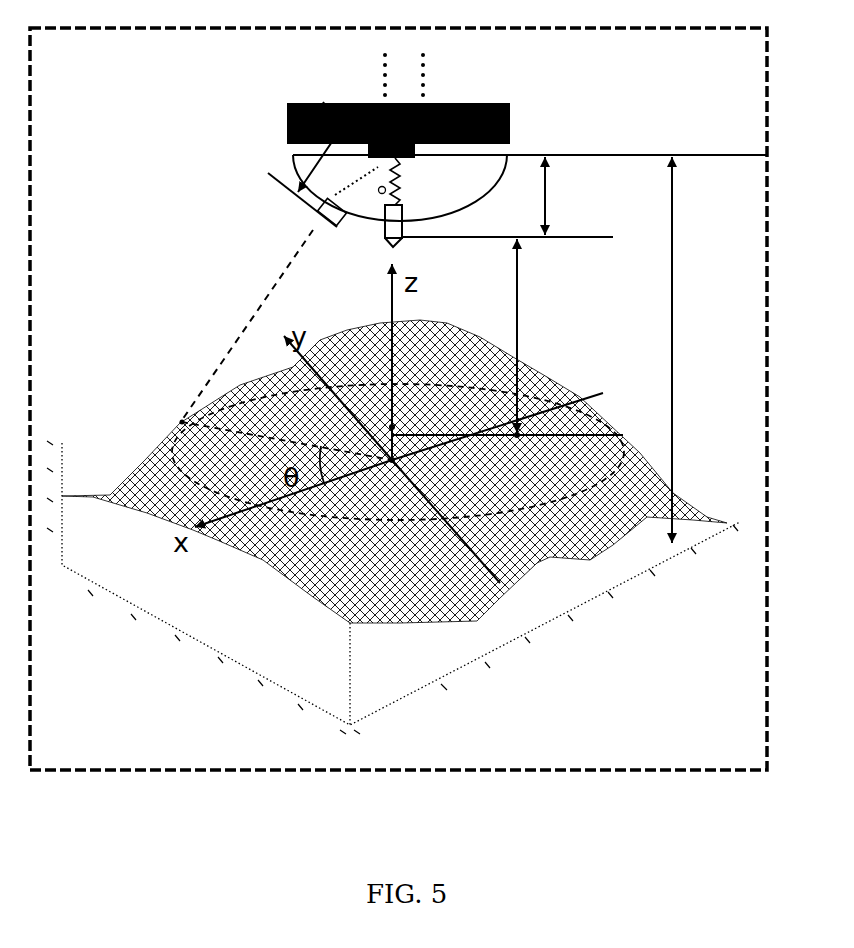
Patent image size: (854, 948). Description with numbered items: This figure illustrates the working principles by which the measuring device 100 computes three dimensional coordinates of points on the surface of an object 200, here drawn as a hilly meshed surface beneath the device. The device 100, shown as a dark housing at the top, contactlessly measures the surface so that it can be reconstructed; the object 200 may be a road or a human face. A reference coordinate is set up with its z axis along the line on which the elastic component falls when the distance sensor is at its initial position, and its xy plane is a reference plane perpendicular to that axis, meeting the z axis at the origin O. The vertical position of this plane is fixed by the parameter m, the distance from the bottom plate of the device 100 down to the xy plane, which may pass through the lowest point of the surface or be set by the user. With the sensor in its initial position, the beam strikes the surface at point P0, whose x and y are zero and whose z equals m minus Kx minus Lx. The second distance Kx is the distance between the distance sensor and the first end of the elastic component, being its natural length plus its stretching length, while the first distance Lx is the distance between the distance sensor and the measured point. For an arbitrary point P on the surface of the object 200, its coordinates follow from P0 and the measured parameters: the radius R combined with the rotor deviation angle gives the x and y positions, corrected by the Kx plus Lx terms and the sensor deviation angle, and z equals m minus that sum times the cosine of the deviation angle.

The measuring device 100 is at (488, 120).
The object 200 is at (473, 593).
The second distance Kx is at (432, 180).
The first distance Lx is at (375, 331).
The parameter m is at (710, 350).
The origin of reference coordinate O is at (408, 476).
The point P0 is at (506, 435).
The arbitrary point P is at (123, 383).
The radius R is at (287, 439).